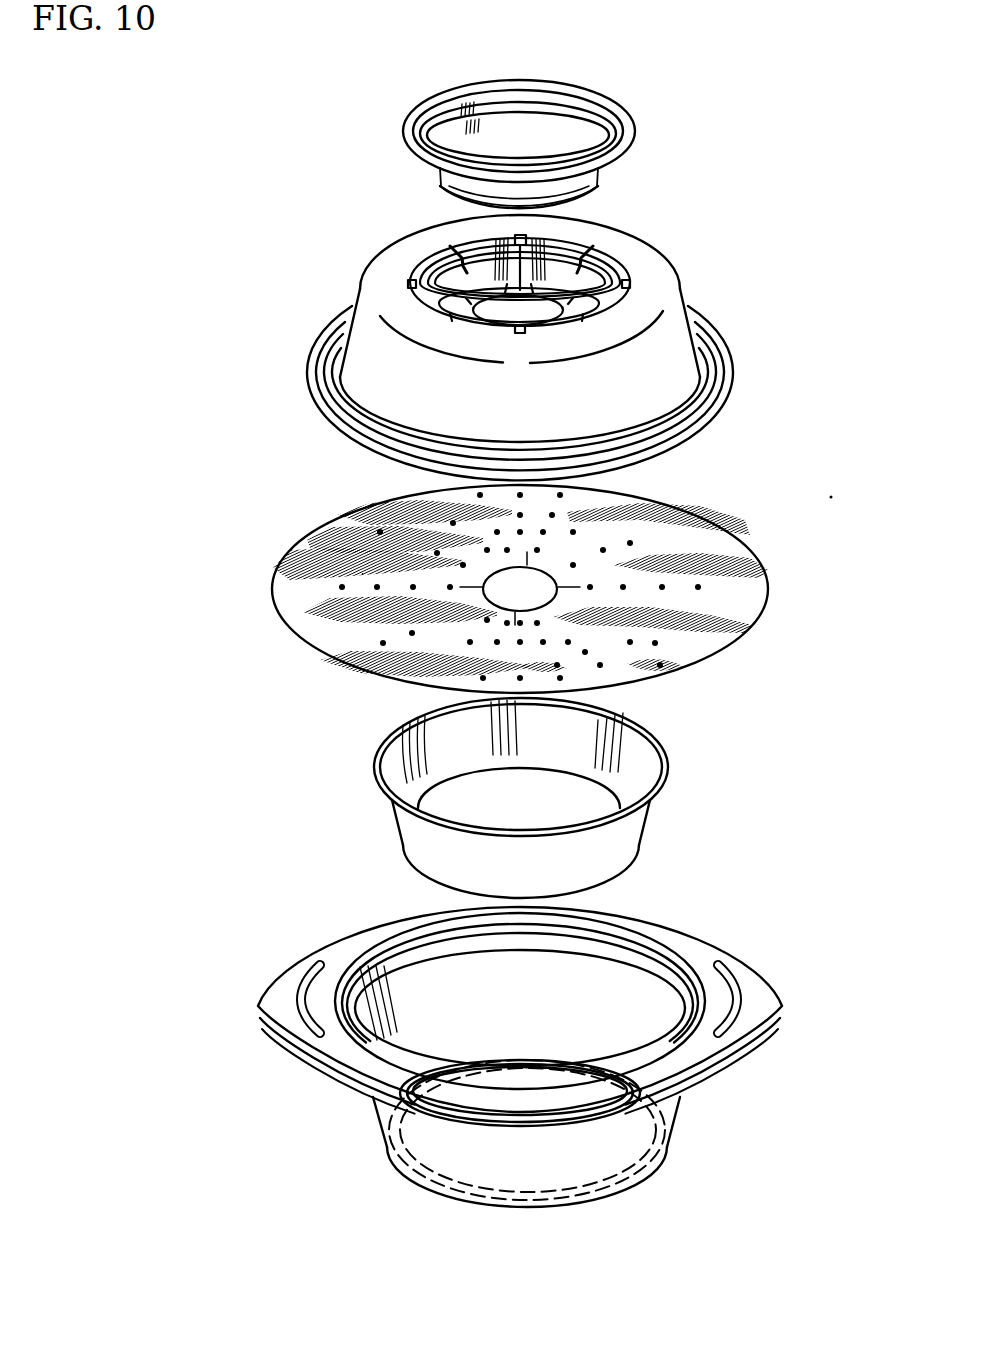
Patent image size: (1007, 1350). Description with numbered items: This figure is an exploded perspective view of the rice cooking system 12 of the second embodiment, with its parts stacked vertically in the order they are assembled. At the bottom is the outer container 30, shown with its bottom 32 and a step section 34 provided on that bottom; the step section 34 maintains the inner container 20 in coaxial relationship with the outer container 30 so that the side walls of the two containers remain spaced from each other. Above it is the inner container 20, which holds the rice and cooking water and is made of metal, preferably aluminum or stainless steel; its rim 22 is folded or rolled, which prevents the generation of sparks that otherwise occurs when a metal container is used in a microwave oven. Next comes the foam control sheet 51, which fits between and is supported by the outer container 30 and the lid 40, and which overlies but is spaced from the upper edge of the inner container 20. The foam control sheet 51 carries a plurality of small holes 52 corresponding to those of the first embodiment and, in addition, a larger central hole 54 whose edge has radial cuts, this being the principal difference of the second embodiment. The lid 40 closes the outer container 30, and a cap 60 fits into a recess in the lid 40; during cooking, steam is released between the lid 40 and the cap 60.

The rice cooking system 12 is at (545, 1264).
The inner container 20 is at (511, 798).
The rim 22 is at (667, 778).
The outer container 30 is at (520, 1040).
The bottom 32 is at (552, 1080).
The step section 34 is at (475, 1067).
The lid 40 is at (364, 268).
The foam control sheet 51 is at (539, 578).
The small holes 52 is at (700, 587).
The central hole 54 is at (520, 587).
The cap 60 is at (403, 125).